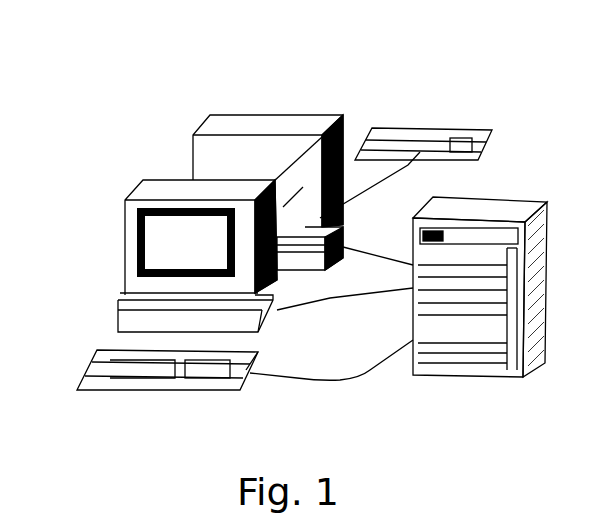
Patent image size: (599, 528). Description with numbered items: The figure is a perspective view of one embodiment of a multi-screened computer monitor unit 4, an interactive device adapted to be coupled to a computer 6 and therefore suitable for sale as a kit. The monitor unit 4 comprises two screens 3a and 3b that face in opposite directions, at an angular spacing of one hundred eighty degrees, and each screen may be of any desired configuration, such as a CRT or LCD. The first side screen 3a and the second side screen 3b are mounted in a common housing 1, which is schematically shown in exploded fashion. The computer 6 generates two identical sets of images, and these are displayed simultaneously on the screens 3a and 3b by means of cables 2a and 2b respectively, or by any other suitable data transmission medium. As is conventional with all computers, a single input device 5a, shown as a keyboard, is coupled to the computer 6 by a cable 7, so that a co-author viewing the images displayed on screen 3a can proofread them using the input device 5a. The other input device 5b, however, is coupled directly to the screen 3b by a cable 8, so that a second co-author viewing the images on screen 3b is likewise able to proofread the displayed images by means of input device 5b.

The common housing 1 is at (168, 140).
The cable 2a is at (327, 302).
The cable 2b is at (367, 252).
The first side screen 3a is at (170, 245).
The second side screen 3b is at (278, 115).
The monitor unit 4 is at (92, 74).
The input device 5a is at (160, 390).
The input device 5b is at (422, 132).
The computer 6 is at (485, 380).
The cable 7 is at (293, 380).
The cable 8 is at (408, 165).